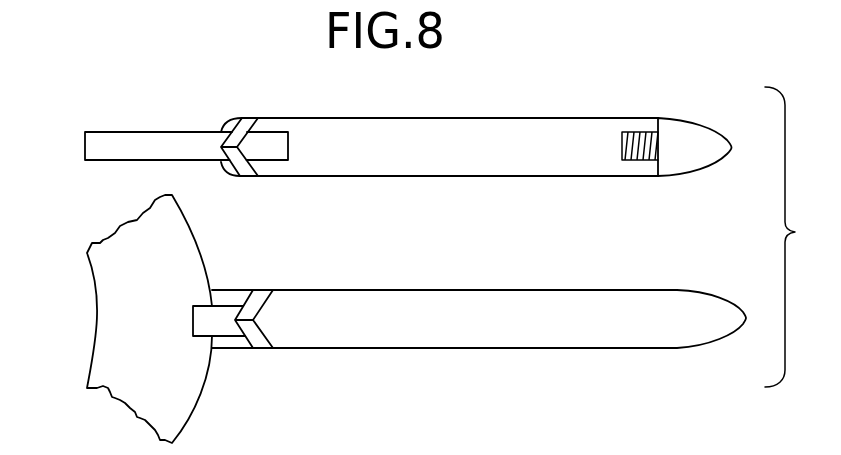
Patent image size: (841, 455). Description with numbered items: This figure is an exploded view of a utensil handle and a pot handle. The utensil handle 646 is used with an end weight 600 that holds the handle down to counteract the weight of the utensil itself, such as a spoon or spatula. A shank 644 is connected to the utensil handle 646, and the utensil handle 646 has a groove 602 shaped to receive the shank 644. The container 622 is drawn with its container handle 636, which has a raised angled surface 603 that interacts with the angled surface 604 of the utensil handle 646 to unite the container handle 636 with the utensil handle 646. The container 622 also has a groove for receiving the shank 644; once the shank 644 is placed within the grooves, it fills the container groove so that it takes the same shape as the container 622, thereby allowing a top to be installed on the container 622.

The end weight 600 is at (680, 137).
The groove 602 is at (185, 314).
The raised angled surface 603 is at (230, 340).
The angled surface 604 is at (242, 130).
The container 622 is at (185, 240).
The container handle 636 is at (640, 330).
The shank 644 is at (158, 143).
The utensil handle 646 is at (568, 140).